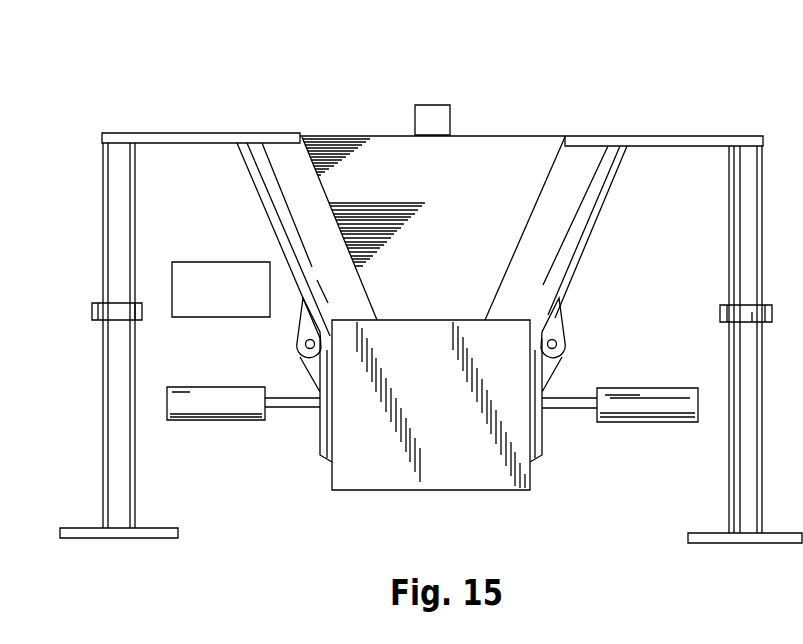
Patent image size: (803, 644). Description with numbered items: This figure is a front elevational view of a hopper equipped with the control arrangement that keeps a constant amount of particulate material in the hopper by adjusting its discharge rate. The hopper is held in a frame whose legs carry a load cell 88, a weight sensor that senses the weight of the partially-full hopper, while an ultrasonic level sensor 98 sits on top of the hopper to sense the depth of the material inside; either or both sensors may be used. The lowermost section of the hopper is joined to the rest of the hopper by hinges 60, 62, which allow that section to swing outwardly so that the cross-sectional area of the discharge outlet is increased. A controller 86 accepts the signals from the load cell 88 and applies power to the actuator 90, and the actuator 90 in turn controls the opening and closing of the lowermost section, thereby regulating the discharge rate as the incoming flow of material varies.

The ultrasonic level sensor 98 is at (445, 120).
The controller 86 is at (247, 262).
The load cell weight sensor 88 is at (118, 311).
The hinge 60 is at (302, 344).
The hinge 62 is at (557, 343).
The actuator 90 is at (228, 421).